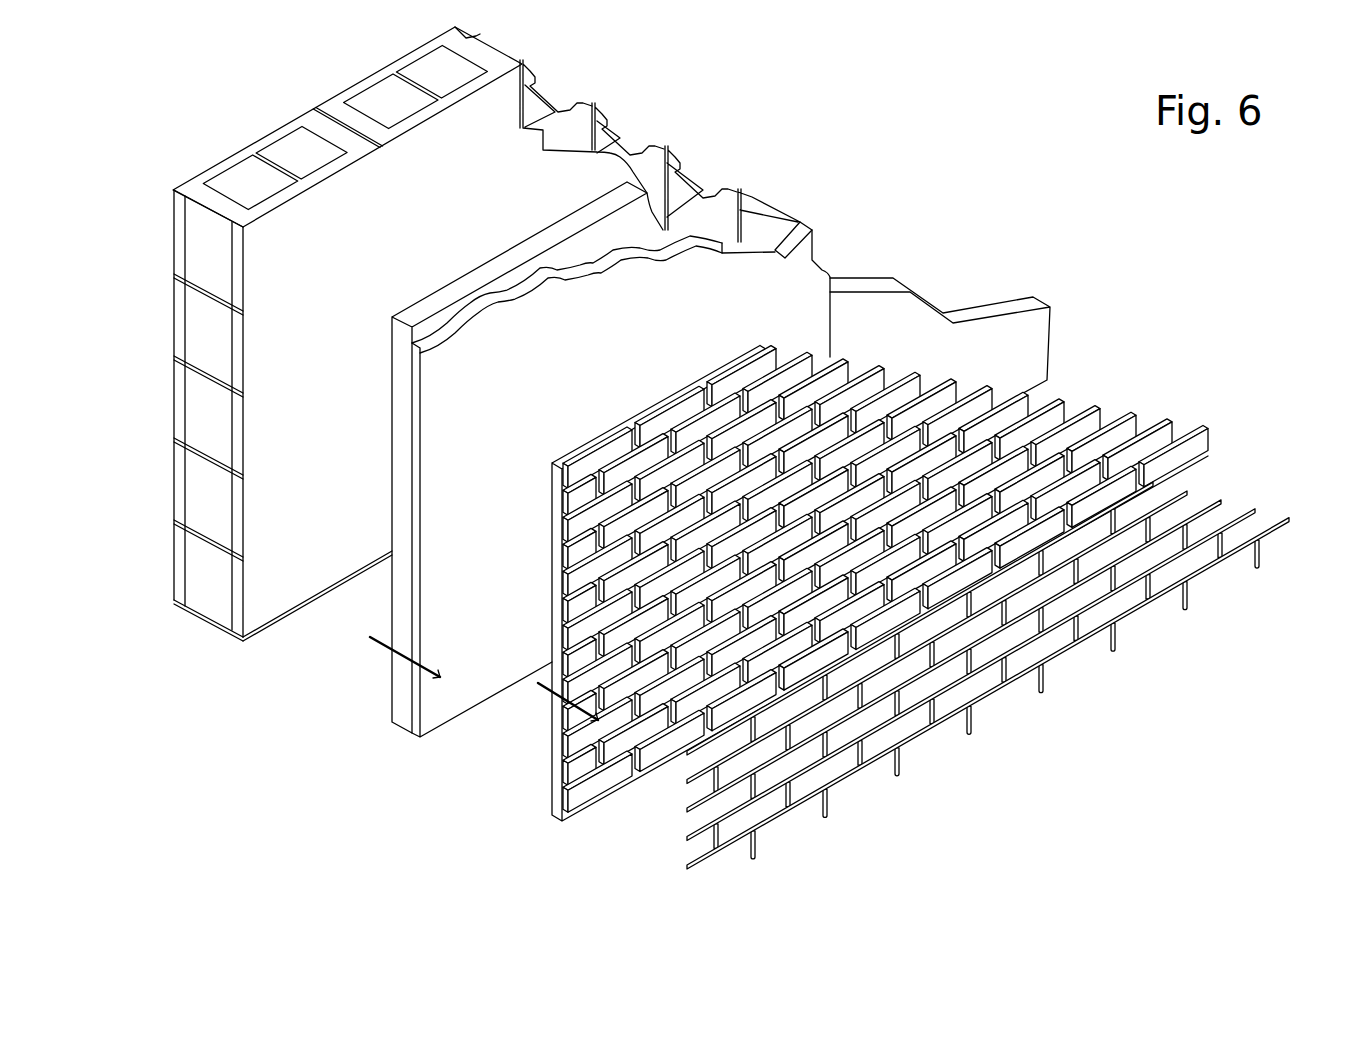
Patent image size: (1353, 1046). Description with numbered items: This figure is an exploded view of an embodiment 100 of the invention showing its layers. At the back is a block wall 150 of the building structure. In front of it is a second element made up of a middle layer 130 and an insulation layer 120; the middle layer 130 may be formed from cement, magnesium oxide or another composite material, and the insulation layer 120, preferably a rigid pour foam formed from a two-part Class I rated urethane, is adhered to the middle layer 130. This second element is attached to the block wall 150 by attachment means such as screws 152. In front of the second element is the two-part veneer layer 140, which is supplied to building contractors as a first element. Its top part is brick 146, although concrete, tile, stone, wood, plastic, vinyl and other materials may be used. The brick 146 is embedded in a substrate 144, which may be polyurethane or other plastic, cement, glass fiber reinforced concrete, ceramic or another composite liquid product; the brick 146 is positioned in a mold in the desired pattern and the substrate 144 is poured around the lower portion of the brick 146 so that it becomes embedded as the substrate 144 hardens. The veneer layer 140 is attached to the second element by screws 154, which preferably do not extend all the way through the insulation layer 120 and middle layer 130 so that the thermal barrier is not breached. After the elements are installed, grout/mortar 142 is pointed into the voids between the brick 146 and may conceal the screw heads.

The embodiment 100 is at (255, 690).
The block wall 150 is at (207, 585).
The insulation layer 120 is at (397, 724).
The middle layer 130 is at (418, 738).
The screws 152 is at (370, 645).
The screws 154 is at (545, 688).
The two-part veneer layer 140 is at (535, 845).
The substrate 144 is at (545, 818).
The brick 146 is at (600, 795).
The grout/mortar 142 is at (707, 862).